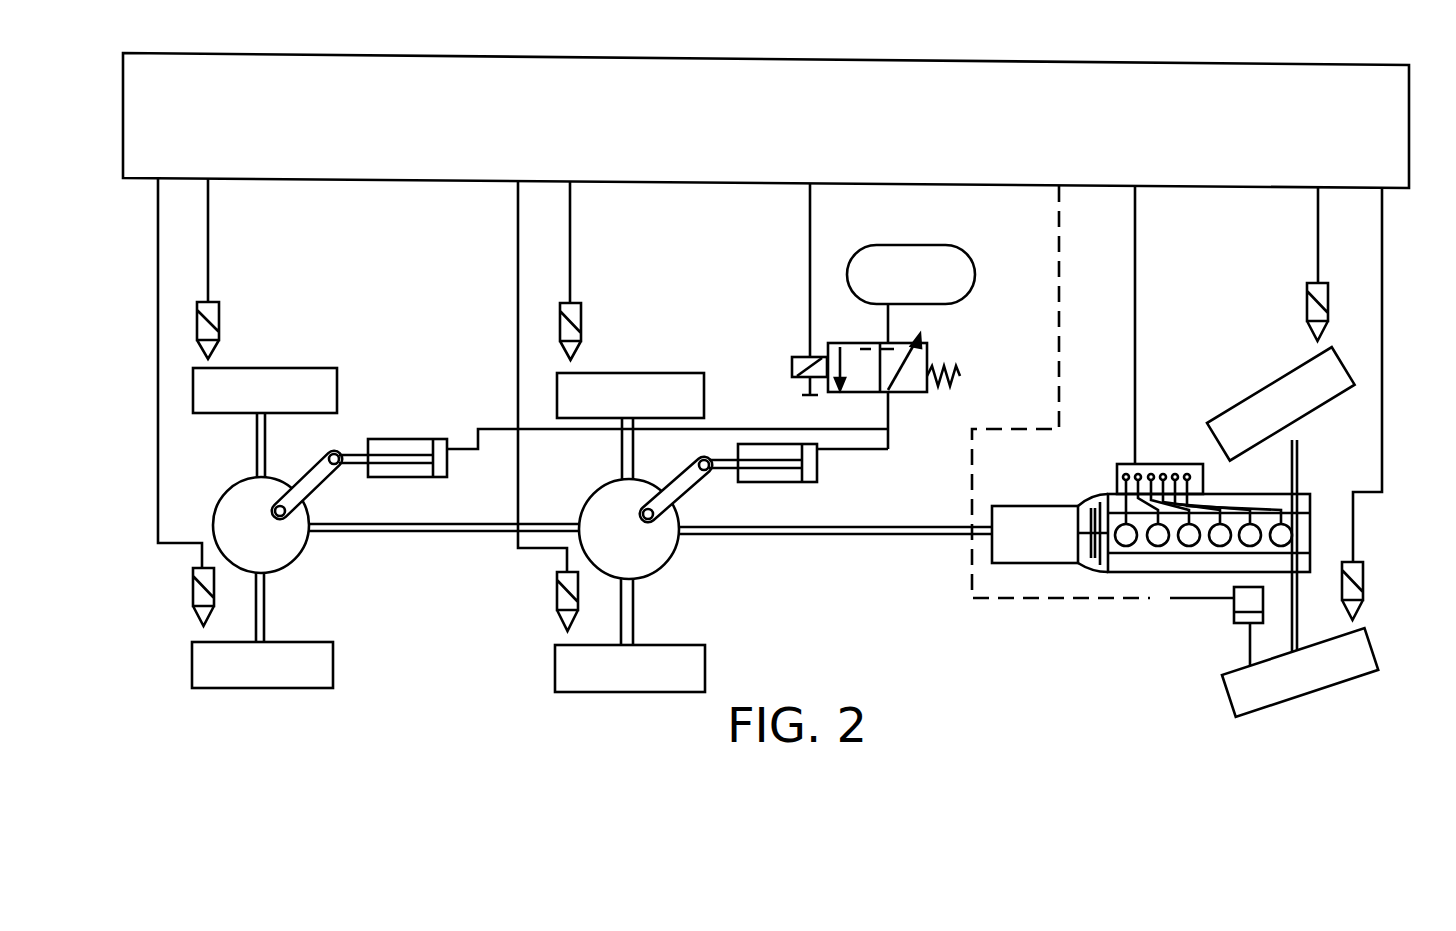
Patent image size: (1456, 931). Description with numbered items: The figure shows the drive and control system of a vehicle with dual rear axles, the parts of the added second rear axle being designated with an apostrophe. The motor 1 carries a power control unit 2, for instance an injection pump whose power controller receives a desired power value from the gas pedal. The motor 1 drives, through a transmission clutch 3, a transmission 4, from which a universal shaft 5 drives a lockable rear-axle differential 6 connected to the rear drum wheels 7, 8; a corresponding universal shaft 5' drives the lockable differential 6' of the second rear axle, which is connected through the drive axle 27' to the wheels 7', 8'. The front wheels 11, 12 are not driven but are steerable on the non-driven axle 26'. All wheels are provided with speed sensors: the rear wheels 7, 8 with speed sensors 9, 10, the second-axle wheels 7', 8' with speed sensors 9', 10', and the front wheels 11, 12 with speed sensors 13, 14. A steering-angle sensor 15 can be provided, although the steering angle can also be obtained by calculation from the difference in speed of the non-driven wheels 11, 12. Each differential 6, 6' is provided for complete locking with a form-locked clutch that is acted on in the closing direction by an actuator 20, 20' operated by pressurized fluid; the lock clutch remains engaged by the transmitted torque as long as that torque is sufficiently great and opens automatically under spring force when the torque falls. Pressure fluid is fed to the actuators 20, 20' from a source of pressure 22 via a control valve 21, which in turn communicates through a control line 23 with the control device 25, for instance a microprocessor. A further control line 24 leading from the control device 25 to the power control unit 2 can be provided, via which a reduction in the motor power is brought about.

The motor 1 is at (1160, 535).
The power control unit 2 is at (1150, 464).
The transmission clutch 3 is at (1095, 560).
The transmission 4 is at (1036, 535).
The universal shaft 5 is at (835, 564).
The universal shaft of second rear axle 5' is at (443, 560).
The lockable rear-axle differential 6 is at (629, 547).
The lockable differential of second rear axle 6' is at (266, 540).
The rear drum wheel 7 is at (630, 363).
The rear drum wheel of second rear axle 7' is at (265, 360).
The rear drum wheel 8 is at (630, 701).
The rear drum wheel of second rear axle 8' is at (262, 692).
The speed sensor 9 is at (578, 303).
The speed sensor of second rear axle 9' is at (218, 303).
The speed sensor 10 is at (541, 612).
The speed sensor of second rear axle 10' is at (177, 613).
The front wheel 11 is at (1340, 396).
The front wheel 12 is at (1378, 642).
The speed sensor 13 is at (1320, 288).
The speed sensor 14 is at (1362, 575).
The steering-angle sensor 15 is at (1243, 598).
The actuator 20 is at (730, 518).
The actuator of second rear axle 20' is at (361, 444).
The control valve 21 is at (915, 378).
The source of pressure 22 is at (885, 262).
The control line 23 is at (810, 236).
The control line 24 is at (1135, 318).
The control device 25 is at (949, 115).
The non-driven axle 26' is at (1329, 539).
The drive axle of second rear axle 27' is at (413, 529).